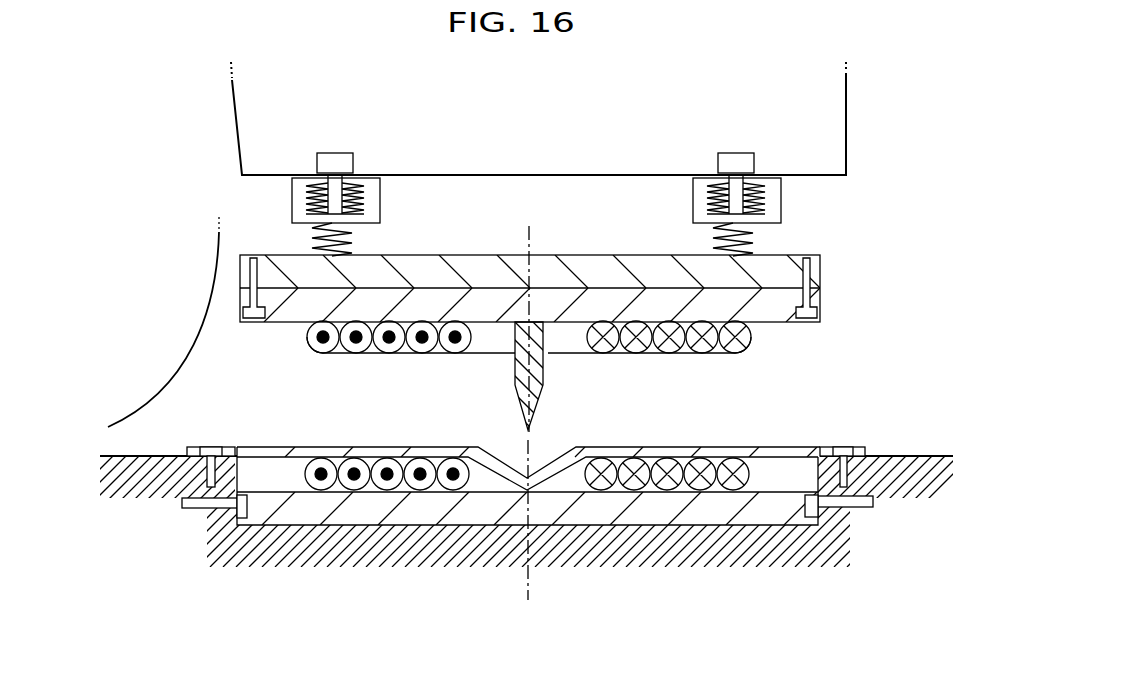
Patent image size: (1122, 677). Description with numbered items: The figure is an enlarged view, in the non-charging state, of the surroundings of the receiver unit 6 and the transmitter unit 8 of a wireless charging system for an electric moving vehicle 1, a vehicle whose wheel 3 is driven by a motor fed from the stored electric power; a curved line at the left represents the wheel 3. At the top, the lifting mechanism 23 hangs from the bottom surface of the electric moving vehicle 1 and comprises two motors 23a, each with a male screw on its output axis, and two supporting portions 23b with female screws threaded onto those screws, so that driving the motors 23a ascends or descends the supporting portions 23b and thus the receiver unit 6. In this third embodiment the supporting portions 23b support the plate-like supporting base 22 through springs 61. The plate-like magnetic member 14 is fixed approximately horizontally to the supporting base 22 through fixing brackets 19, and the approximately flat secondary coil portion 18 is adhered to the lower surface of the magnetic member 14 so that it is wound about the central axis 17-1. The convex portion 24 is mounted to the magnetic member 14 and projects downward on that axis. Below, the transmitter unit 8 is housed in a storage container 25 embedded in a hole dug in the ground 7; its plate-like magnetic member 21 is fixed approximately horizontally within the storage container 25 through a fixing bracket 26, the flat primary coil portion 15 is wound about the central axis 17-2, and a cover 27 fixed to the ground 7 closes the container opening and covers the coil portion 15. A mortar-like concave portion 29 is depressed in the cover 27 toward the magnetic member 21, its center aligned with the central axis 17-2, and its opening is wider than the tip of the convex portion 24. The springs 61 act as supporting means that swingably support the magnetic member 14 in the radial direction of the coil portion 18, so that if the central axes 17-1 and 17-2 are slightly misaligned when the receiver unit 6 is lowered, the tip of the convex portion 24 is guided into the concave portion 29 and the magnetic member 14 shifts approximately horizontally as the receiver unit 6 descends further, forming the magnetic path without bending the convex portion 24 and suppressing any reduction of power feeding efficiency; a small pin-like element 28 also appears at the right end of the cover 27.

The electric moving vehicle 1 is at (846, 119).
The wheel 3 is at (187, 352).
The receiver unit 6 is at (571, 321).
The ground 7 is at (915, 455).
The transmitter unit 8 is at (526, 521).
The magnetic member 14 is at (447, 298).
The coil portion (primary coil) 15 is at (419, 466).
The central axis 17-1 is at (535, 240).
The central axis 17-2 is at (532, 586).
The coil portion (secondary coil) 18 is at (322, 347).
The fixing bracket 19 is at (812, 265).
The magnetic member 21 is at (386, 515).
The supporting base 22 is at (497, 270).
The lifting mechanism 23 is at (547, 146).
The motor 23a is at (325, 155).
The supporting portion 23b is at (372, 185).
The convex portion 24 is at (541, 387).
The storage container 25 is at (823, 477).
The fixing bracket 26 is at (192, 510).
The cover 27 is at (693, 450).
The positioning pin 28 is at (843, 447).
The concave portion 29 is at (507, 462).
The spring 61 is at (352, 245).